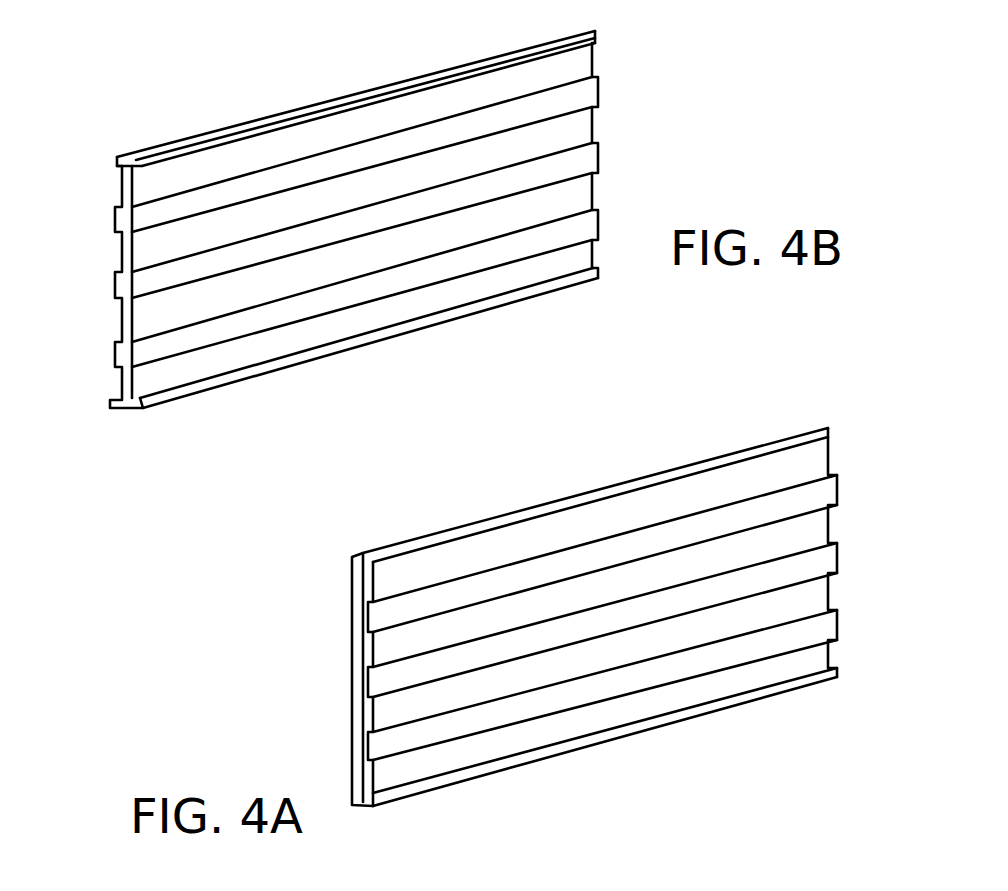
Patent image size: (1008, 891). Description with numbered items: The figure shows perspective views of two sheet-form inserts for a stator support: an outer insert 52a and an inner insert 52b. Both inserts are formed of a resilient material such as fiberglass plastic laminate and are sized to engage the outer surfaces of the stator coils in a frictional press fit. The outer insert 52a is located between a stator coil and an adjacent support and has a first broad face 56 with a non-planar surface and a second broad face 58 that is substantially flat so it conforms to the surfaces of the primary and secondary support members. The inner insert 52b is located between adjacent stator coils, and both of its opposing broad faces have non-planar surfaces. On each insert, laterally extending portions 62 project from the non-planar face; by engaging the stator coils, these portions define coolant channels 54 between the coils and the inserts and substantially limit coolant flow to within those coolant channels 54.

In FIG. 4A, the outer insert 52a is at (563, 633).
In FIG. 4B, the inner insert 52b is at (315, 276).
In FIG. 4B, the coolant channel 54 is at (100, 387).
In FIG. 4A, the coolant channel 54 is at (856, 519).
In FIG. 4A, the first broad face 56 is at (514, 768).
In FIG. 4A, the second broad face 58 is at (352, 680).
In FIG. 4B, the laterally extending portion 62 is at (115, 290).
In FIG. 4A, the laterally extending portion 62 is at (380, 610).